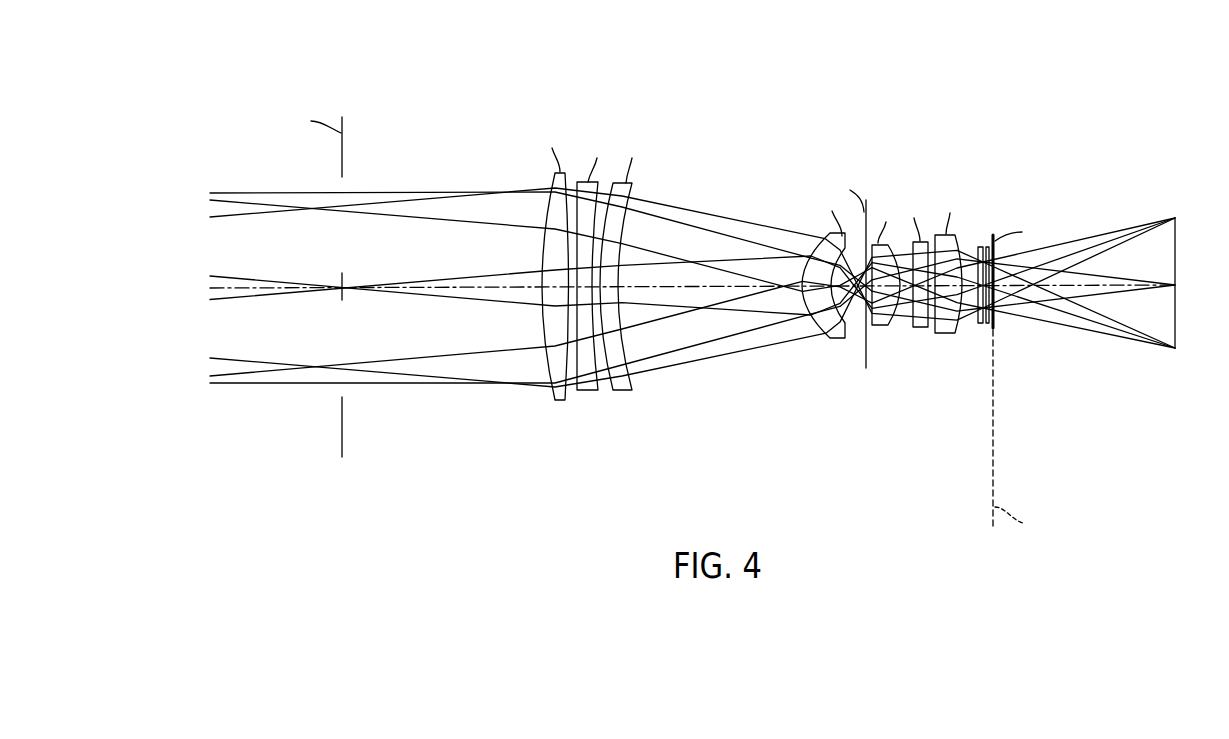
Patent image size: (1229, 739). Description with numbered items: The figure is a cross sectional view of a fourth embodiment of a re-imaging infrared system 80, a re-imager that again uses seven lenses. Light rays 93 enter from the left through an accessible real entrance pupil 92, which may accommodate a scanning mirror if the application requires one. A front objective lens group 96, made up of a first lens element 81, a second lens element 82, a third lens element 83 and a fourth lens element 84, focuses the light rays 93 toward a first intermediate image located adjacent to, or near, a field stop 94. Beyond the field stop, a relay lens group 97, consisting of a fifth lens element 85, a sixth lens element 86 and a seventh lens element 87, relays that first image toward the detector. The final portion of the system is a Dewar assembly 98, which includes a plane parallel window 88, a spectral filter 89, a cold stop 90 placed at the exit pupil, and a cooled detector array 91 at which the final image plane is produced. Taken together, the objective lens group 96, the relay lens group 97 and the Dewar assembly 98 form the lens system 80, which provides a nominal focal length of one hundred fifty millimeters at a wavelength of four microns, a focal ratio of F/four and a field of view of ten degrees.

The re-imaging infrared system 80 is at (713, 80).
The lens element L1 81 is at (561, 400).
The lens element L2 82 is at (588, 392).
The lens element L3 83 is at (624, 392).
The lens element L4 84 is at (838, 338).
The lens element L5 85 is at (876, 326).
The lens element L6 86 is at (918, 328).
The lens element L7 87 is at (945, 334).
The plane parallel window 88 is at (980, 323).
The spectral filter 89 is at (987, 323).
The cold stop 90 is at (996, 325).
The cooled detector array 91 is at (1177, 322).
The real entrance pupil 92 is at (341, 432).
The light rays 93 is at (430, 297).
The field stop 94 is at (865, 362).
The front objective lens group 96 is at (558, 82).
The relay lens group 97 is at (848, 85).
The Dewar assembly 98 is at (980, 113).